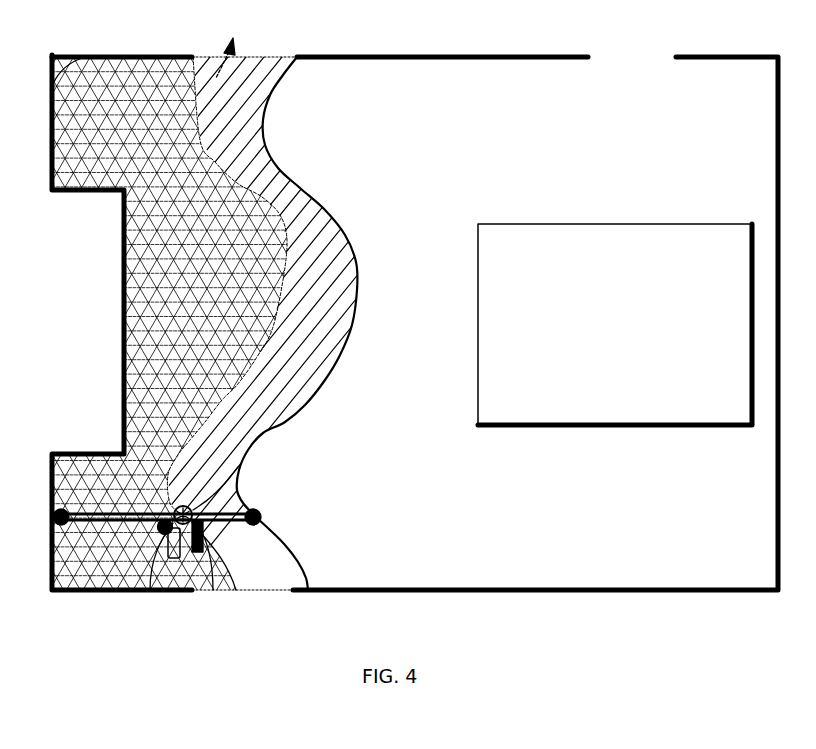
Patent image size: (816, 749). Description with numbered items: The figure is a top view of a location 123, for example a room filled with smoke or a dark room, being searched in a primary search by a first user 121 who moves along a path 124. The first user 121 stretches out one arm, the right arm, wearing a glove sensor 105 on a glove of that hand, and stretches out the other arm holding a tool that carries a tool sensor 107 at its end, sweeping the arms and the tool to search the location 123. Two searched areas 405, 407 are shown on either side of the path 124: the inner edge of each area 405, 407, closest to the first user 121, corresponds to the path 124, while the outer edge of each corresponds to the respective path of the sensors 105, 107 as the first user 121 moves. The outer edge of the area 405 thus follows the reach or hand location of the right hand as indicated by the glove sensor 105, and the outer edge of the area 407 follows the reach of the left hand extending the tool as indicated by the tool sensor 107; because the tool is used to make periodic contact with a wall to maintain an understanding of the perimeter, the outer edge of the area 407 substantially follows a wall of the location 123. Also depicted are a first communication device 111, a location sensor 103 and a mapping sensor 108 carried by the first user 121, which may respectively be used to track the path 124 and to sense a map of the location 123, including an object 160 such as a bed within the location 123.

The location sensor 103 is at (160, 540).
The glove sensor 105 is at (261, 517).
The tool sensor 107 is at (58, 511).
The mapping sensor 108 is at (200, 553).
The first communication device 111 is at (172, 560).
The first user 121 is at (214, 498).
The location 123 is at (485, 594).
The path 124 is at (228, 42).
The object 160 is at (478, 325).
The area 405 is at (272, 409).
The area 407 is at (69, 60).